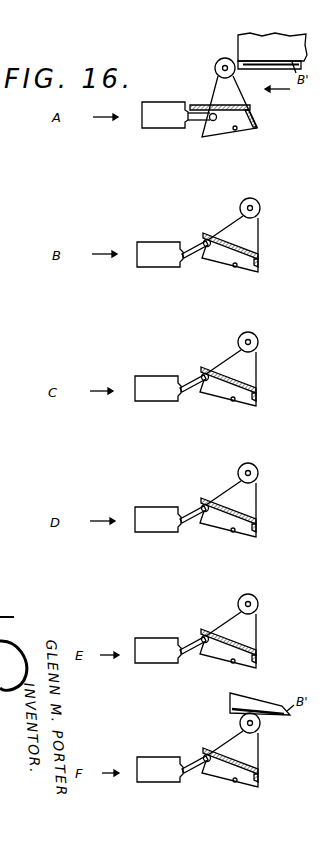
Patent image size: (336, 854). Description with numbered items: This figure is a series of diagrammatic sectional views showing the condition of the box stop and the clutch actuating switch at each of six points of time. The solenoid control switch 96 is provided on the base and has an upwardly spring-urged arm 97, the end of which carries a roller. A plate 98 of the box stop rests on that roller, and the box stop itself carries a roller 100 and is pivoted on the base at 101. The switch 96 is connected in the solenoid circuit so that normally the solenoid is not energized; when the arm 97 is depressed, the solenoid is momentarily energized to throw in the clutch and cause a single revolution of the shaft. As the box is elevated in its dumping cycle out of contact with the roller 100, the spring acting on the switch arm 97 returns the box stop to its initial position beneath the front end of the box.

The solenoid control switch 96 is at (163, 108).
The spring-urged arm 97 is at (194, 127).
The plate 98 is at (225, 108).
The roller 100 is at (219, 60).
The pivot 101 is at (236, 130).